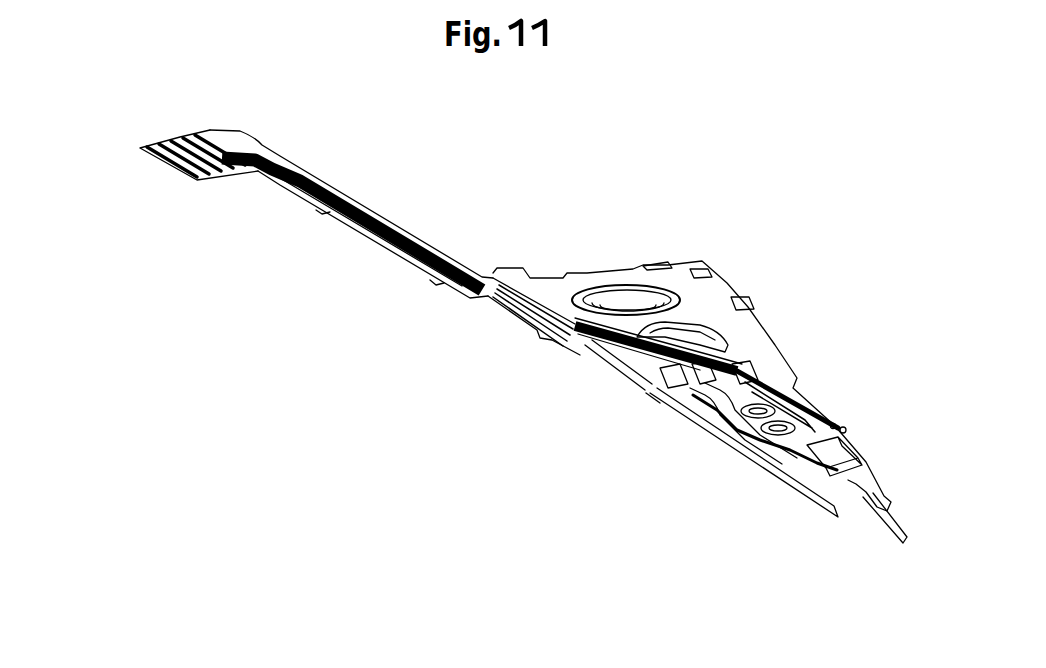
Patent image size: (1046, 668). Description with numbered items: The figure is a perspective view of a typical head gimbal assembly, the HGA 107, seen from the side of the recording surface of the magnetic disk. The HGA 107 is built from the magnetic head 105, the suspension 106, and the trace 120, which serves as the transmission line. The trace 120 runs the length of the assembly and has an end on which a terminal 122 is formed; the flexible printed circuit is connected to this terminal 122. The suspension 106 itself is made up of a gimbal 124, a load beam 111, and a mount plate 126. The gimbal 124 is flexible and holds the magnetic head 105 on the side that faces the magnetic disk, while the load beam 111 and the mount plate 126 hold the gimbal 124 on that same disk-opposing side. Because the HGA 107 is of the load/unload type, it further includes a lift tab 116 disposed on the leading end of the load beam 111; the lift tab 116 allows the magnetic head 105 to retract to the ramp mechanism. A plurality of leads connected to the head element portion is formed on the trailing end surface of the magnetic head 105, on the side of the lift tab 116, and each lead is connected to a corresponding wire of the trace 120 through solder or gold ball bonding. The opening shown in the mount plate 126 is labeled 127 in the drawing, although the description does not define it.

The magnetic head 105 is at (770, 468).
The suspension 106 is at (853, 323).
The head gimbal assembly (HGA) 107 is at (547, 186).
The load beam 111 is at (796, 381).
The lift tab 116 is at (905, 546).
The trace 120 is at (416, 232).
The terminal 122 is at (133, 151).
The gimbal 124 is at (838, 426).
The mount plate 126 is at (660, 263).
The opening 127 is at (607, 288).